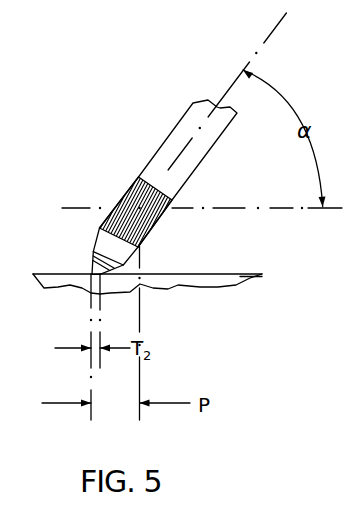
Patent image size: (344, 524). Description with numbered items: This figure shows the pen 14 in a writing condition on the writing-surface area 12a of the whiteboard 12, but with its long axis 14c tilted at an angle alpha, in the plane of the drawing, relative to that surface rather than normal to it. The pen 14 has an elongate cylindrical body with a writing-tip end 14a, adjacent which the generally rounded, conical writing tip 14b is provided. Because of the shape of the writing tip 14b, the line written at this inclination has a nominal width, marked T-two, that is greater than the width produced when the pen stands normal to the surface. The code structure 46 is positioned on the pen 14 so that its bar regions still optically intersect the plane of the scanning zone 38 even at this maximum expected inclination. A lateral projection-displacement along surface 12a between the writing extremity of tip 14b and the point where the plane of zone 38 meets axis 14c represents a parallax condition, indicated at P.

The whiteboard 12 is at (205, 289).
The writing-surface area 12a is at (200, 274).
The pen 14 is at (154, 143).
The writing-tip end 14a is at (96, 241).
The writing tip 14b is at (92, 270).
The long axis 14c is at (165, 135).
The scanning zone 38 is at (222, 207).
The code structure 46 is at (111, 199).